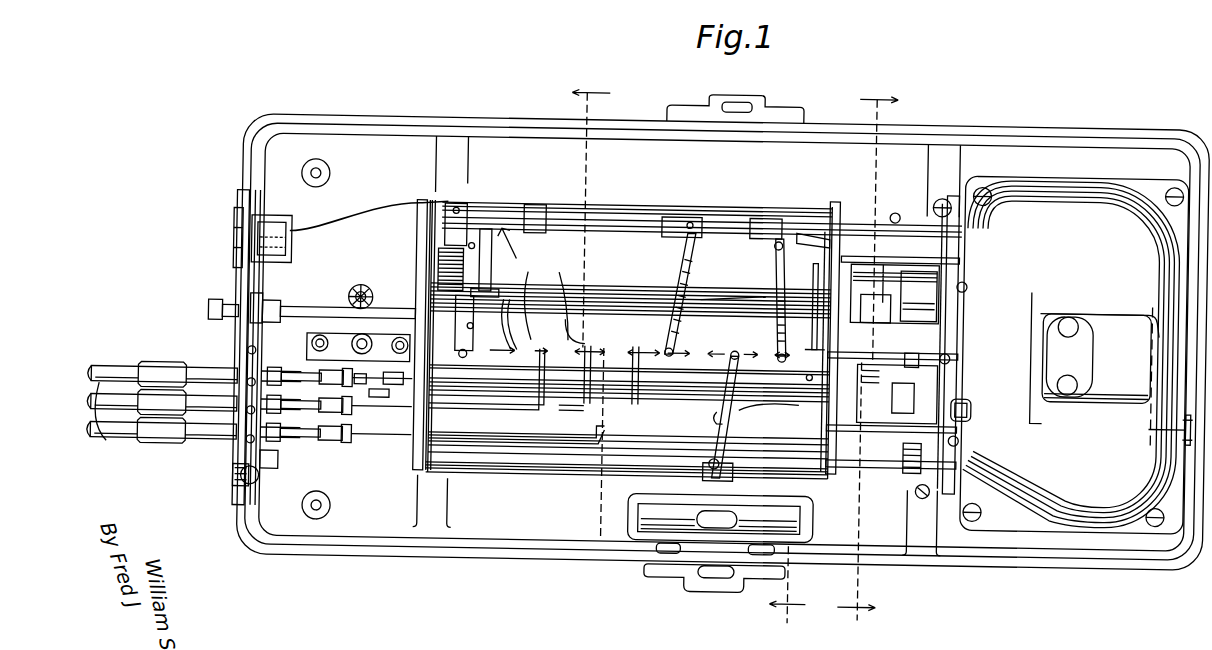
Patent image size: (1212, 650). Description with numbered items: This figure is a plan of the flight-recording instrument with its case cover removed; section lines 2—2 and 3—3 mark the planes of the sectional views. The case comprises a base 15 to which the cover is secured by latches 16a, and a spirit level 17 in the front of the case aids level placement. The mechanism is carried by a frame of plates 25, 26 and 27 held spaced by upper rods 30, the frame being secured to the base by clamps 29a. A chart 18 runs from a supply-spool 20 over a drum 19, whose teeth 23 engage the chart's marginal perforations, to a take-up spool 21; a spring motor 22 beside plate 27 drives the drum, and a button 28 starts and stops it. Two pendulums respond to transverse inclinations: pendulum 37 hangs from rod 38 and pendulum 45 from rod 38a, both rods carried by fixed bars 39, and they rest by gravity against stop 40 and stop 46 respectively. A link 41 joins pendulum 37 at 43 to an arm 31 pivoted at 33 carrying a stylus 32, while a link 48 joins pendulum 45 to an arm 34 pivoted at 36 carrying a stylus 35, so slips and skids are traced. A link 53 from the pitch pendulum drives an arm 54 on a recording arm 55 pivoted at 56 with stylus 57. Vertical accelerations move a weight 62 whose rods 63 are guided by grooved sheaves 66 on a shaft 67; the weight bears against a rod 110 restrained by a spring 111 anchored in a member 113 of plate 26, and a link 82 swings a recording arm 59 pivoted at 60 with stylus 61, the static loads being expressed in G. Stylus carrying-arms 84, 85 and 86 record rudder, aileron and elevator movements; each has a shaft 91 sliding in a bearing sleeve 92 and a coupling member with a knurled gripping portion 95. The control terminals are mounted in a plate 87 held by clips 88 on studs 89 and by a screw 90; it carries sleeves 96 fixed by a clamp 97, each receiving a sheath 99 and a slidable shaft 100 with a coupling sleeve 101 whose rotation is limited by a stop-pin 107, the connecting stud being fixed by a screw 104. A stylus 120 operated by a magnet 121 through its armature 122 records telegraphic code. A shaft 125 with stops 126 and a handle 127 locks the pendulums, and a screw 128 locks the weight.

The section line 2— 2 is at (689, 354).
The section line 3— 3 is at (868, 359).
The base 15 is at (497, 148).
The latches 16a is at (743, 112).
The spirit level 17 is at (814, 532).
The chart 18 is at (552, 480).
The drum 19 is at (605, 329).
The supply-spool 20 is at (496, 474).
The take-up spool 21 is at (600, 210).
The spring motor 22 is at (1071, 354).
The teeth 23 is at (466, 346).
The frame-plate 25 is at (832, 210).
The frame-plate 26 is at (418, 203).
The frame-plate 27 is at (966, 284).
The button 28 is at (1150, 423).
The clamps 29a is at (952, 195).
The upper rods 30 is at (712, 226).
The arm 31 is at (728, 446).
The stylus 32 is at (728, 360).
The pivot 33 is at (708, 464).
The arm 34 is at (695, 264).
The stylus 35 is at (672, 350).
The pivot 36 is at (692, 218).
The pendulum 37 is at (916, 470).
The rod 38 is at (904, 398).
The rod 38a is at (866, 300).
The fixed bars 39 is at (894, 210).
The stop 40 is at (973, 396).
The link 41 is at (760, 406).
The pivot connection 43 is at (716, 418).
The pendulum 45 is at (898, 310).
The stop 46 is at (858, 313).
The link 48 is at (750, 298).
The link 53 is at (836, 256).
The arm 54 is at (796, 232).
The recording arm 55 is at (780, 296).
The pivot 56 is at (778, 218).
The stylus 57 is at (783, 360).
The recording arm 59 is at (540, 210).
The pivot 60 is at (502, 231).
The stylus 61 is at (510, 350).
The weight 62 is at (352, 382).
The rods 63 is at (393, 352).
The grooved sheaves 66 is at (377, 389).
The shaft 67 is at (392, 385).
The link 82 is at (482, 290).
The stylus carrying-arm 84 is at (594, 370).
The stylus carrying arm 85 is at (562, 295).
The stylus carrying-arm 86 is at (528, 294).
The plate 87 is at (270, 228).
The clips 88 is at (262, 470).
The studs 89 is at (262, 486).
The screw 90 is at (216, 306).
The shaft 91 is at (520, 416).
The bearing sleeve 92 is at (490, 446).
The knurled gripping portion 95 is at (383, 446).
The sleeves 96 is at (200, 418).
The clamp 97 is at (240, 359).
The sheath 99 is at (108, 438).
The shaft 100 is at (318, 420).
The coupling sleeve 101 is at (354, 462).
The screw 104 is at (328, 446).
The stop-pin 107 is at (342, 422).
The rod 110 is at (340, 342).
The spring 111 is at (352, 352).
The member 113 is at (315, 357).
The stylus 120 is at (480, 348).
The magnet 121 is at (448, 252).
The armature 122 is at (240, 246).
The shaft 125 is at (950, 359).
The stops 126 is at (912, 360).
The handle 127 is at (812, 322).
The screw 128 is at (364, 290).
The gap G is at (744, 345).